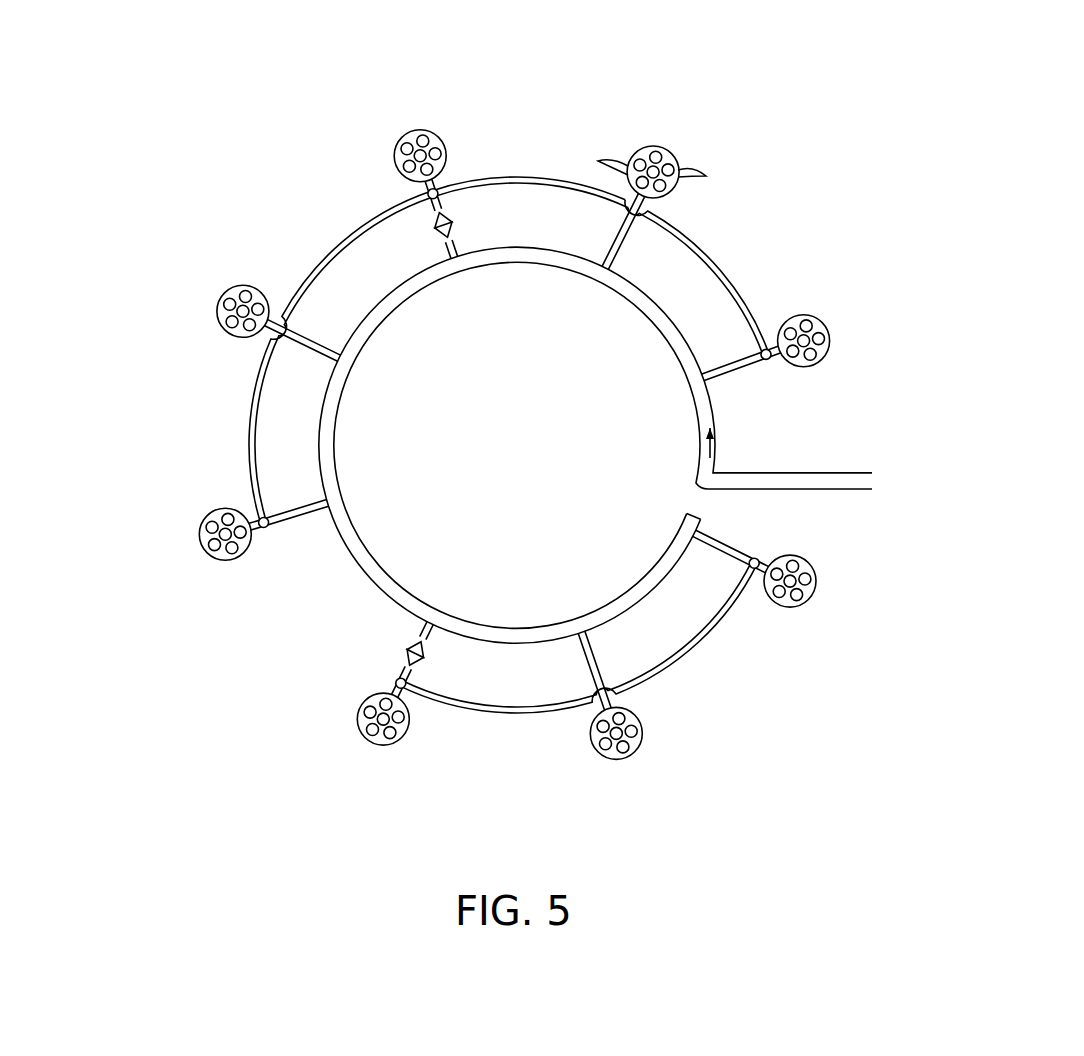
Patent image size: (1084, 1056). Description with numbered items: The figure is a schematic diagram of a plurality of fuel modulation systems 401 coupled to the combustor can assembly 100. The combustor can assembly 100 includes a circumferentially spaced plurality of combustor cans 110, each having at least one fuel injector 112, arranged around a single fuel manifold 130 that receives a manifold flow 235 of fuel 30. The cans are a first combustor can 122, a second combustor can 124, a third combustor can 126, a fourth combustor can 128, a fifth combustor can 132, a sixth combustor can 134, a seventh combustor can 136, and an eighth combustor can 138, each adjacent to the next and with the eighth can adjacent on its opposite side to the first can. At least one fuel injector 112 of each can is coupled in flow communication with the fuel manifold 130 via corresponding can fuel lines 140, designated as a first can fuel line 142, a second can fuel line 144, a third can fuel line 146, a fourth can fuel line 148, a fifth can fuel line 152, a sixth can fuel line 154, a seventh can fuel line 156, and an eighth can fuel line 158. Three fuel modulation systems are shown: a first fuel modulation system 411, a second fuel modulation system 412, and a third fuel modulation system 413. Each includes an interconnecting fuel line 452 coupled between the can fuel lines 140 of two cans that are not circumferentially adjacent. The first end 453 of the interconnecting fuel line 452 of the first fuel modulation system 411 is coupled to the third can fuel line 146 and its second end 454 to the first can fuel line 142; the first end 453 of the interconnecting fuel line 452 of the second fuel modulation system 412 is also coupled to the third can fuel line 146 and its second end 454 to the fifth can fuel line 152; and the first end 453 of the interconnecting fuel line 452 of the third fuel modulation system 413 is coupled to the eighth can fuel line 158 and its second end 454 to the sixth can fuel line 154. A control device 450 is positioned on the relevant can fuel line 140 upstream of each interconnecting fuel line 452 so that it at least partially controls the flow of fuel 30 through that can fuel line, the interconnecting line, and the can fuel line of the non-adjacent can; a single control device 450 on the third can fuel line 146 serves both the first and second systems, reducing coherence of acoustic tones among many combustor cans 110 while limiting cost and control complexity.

The combustor can assembly 100 is at (604, 74).
The combustor cans 110 is at (515, 446).
The fuel injector 112 is at (610, 165).
The first combustor can 122 is at (204, 518).
The second combustor can 124 is at (248, 284).
The third combustor can 126 is at (432, 133).
The fourth combustor can 128 is at (640, 148).
The fuel manifold 130 is at (568, 274).
The fifth combustor can 132 is at (830, 345).
The sixth combustor can 134 is at (798, 607).
The seventh combustor can 136 is at (603, 757).
The eighth combustor can 138 is at (370, 742).
The can fuel line 140 is at (488, 444).
The first can fuel line 142 is at (284, 530).
The second can fuel line 144 is at (307, 350).
The third can fuel line 146 is at (458, 252).
The fourth can fuel line 148 is at (648, 253).
The fifth can fuel line 152 is at (735, 366).
The sixth can fuel line 154 is at (717, 540).
The seventh can fuel line 156 is at (582, 660).
The eighth can fuel line 158 is at (412, 626).
The fuel 30 is at (716, 435).
The manifold flow 235 is at (836, 483).
The fuel modulation system 401 is at (475, 424).
The first fuel modulation system 411 is at (153, 319).
The second fuel modulation system 412 is at (774, 128).
The third fuel modulation system 413 is at (752, 722).
The control device 450 is at (438, 232).
The interconnecting fuel line 452 is at (475, 424).
The first end 453 is at (402, 188).
The second end 454 is at (769, 347).